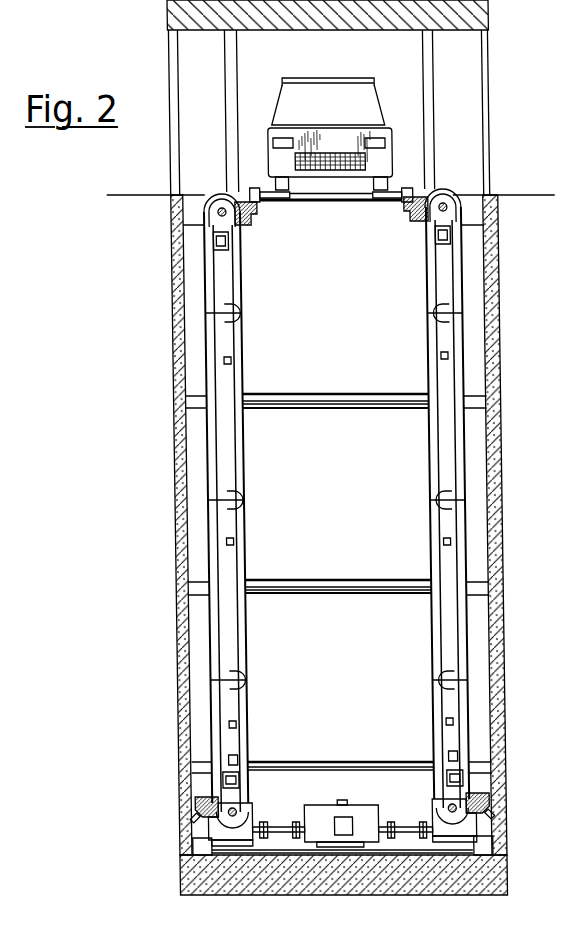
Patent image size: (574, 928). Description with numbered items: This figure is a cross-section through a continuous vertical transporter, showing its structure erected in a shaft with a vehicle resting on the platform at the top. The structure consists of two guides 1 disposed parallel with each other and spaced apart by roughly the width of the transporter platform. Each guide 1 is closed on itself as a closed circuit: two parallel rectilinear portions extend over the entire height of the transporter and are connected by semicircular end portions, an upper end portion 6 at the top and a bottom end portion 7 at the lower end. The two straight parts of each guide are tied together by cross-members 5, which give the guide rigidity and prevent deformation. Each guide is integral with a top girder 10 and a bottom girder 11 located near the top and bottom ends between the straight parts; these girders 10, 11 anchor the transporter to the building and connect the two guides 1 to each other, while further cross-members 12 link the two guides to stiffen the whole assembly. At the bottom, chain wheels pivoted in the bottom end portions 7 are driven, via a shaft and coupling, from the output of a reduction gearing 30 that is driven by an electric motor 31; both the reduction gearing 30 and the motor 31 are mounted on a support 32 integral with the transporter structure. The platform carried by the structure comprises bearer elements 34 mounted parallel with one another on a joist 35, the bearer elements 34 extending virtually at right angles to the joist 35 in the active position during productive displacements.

The guide 1 is at (208, 440).
The cross-member 5 is at (241, 324).
The upper end portion 6 is at (210, 214).
The bottom end portion 7 is at (243, 812).
The top girder 10 is at (232, 241).
The bottom girder 11 is at (219, 779).
The cross-member 12 is at (238, 306).
The reduction gearing 30 is at (507, 835).
The electric motor 31 is at (359, 812).
The support 32 is at (284, 852).
The bearer element 34 is at (286, 201).
The joist 35 is at (258, 188).